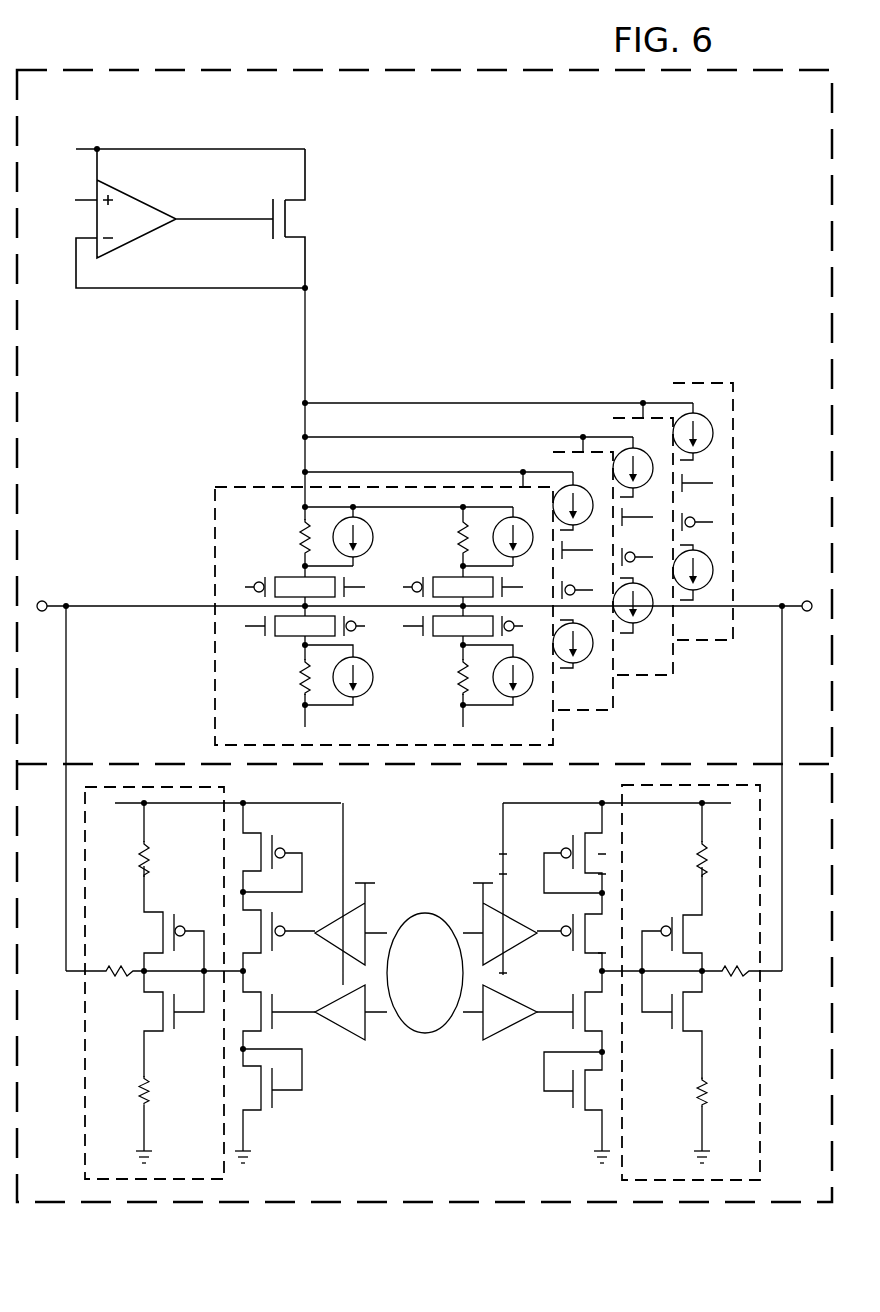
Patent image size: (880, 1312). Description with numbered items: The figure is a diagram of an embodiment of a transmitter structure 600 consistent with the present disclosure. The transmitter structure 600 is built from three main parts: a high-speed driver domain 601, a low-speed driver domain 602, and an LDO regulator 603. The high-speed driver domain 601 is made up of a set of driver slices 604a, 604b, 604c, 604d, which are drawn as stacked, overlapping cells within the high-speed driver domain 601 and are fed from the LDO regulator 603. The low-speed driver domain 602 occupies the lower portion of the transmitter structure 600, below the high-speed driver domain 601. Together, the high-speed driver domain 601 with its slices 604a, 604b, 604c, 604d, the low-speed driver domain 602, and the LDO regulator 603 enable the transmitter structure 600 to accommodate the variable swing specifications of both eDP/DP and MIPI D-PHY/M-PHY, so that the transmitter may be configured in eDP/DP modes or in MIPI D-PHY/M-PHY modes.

The transmitter structure 600 is at (92, 58).
The high-speed driver domain 601 is at (611, 153).
The low-speed driver domain 602 is at (443, 1146).
The LDO regulator 603 is at (320, 88).
The slice 604a is at (210, 565).
The slice 604b is at (268, 472).
The slice 604c is at (680, 669).
The slice 604d is at (740, 484).